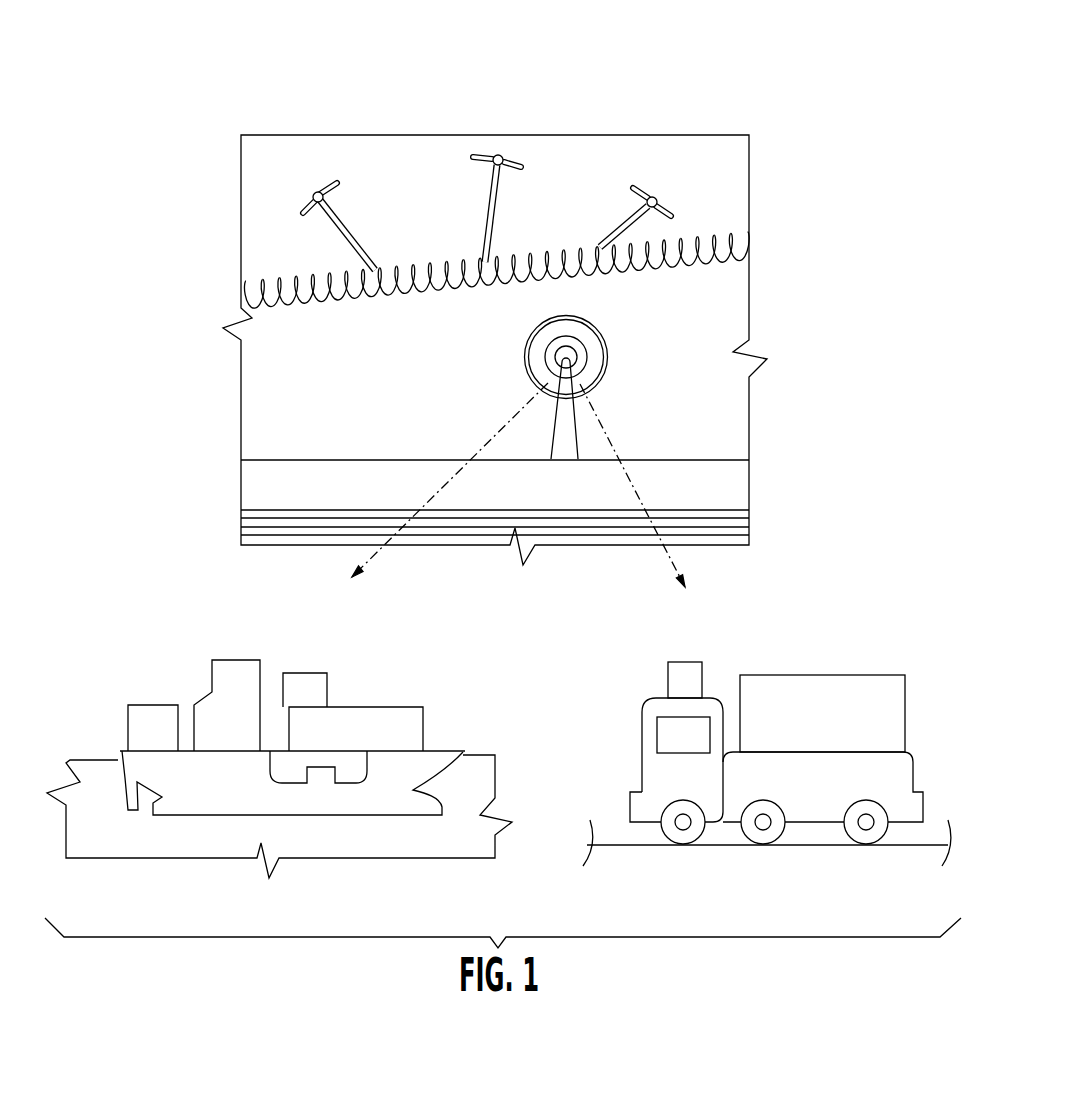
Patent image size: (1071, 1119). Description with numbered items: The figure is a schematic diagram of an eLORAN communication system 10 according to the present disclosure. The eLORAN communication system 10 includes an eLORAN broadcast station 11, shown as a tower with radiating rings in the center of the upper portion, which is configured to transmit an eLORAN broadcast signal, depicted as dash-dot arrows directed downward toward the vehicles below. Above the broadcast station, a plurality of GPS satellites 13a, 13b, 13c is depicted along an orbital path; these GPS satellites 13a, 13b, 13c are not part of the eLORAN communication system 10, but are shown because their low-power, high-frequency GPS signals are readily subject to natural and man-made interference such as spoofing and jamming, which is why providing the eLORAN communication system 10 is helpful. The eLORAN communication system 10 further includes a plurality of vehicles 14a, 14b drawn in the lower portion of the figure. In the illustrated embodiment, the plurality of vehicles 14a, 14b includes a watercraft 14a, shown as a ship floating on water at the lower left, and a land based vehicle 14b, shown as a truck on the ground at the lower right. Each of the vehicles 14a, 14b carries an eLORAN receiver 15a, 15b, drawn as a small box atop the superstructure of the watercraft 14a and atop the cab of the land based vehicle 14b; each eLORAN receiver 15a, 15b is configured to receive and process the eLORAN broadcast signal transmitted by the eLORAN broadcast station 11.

The eLORAN communication system 10 is at (755, 73).
The eLORAN broadcast station 11 is at (572, 447).
The GPS satellite 13a is at (660, 196).
The GPS satellite 13b is at (497, 154).
The GPS satellite 13c is at (312, 194).
The watercraft 14a is at (383, 667).
The land based vehicle 14b is at (797, 654).
The eLORAN receiver 15a is at (311, 687).
The eLORAN receiver 15b is at (689, 672).